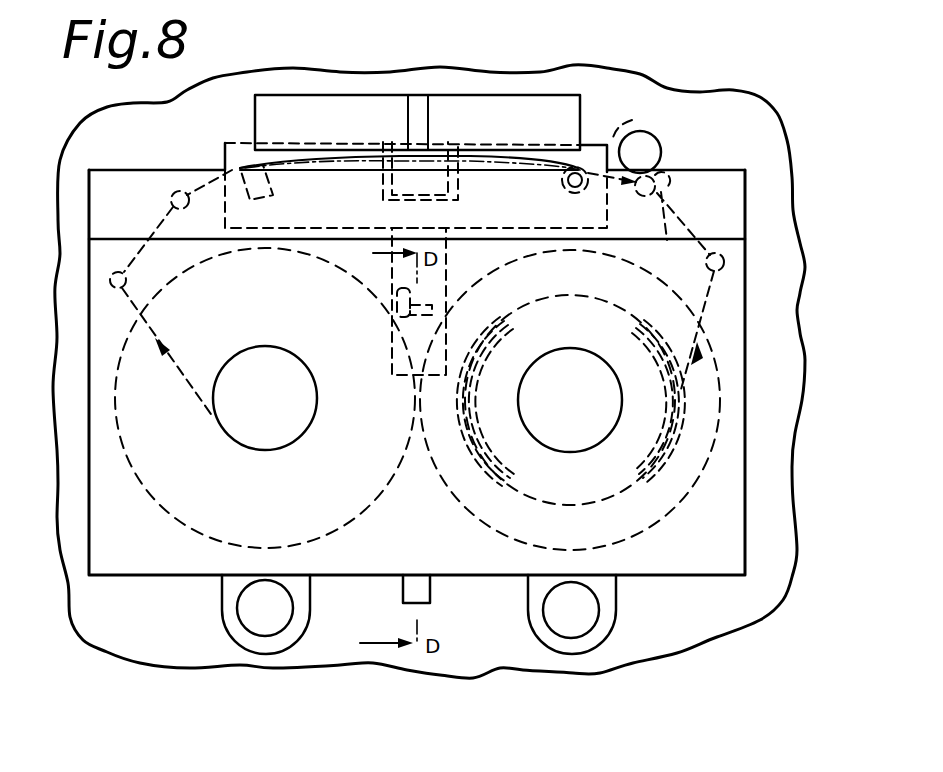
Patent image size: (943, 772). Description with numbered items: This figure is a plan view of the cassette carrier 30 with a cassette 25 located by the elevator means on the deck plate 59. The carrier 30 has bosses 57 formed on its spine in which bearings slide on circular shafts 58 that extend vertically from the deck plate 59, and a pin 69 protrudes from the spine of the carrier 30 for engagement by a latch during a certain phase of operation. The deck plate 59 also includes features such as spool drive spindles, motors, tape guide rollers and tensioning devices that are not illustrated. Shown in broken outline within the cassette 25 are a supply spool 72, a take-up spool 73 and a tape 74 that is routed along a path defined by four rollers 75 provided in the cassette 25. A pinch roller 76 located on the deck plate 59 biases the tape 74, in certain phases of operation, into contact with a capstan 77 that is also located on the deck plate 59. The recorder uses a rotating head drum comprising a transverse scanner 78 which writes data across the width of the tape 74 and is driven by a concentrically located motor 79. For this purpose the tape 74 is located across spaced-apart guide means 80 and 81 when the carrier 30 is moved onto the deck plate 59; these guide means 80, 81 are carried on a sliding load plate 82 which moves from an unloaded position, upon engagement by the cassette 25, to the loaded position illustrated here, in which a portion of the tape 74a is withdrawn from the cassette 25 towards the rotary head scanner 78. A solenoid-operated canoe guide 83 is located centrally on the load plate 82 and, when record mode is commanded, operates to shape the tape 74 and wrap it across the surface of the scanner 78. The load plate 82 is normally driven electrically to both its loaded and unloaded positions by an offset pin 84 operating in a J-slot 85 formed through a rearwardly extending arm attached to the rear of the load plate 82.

The cassette 25 is at (176, 168).
The cassette carrier 30 is at (740, 493).
The bosses 57 is at (240, 632).
The circular shafts 58 is at (250, 607).
The deck plate 59 is at (782, 401).
The pin 69 is at (430, 590).
The supply spool 72 is at (172, 522).
The take-up spool 73 is at (665, 521).
The tape 74 is at (140, 232).
The portion of the tape 74a is at (484, 162).
The rollers 75 is at (168, 200).
The pinch roller 76 is at (645, 151).
The capstan 77 is at (637, 193).
The transverse scanner 78 is at (422, 110).
The motor 79 is at (309, 98).
The guide means 80 is at (277, 190).
The guide means 81 is at (635, 122).
The sliding load plate 82 is at (591, 162).
The canoe guide 83 is at (388, 153).
The offset pin 84 is at (392, 333).
The J-slot 85 is at (372, 292).